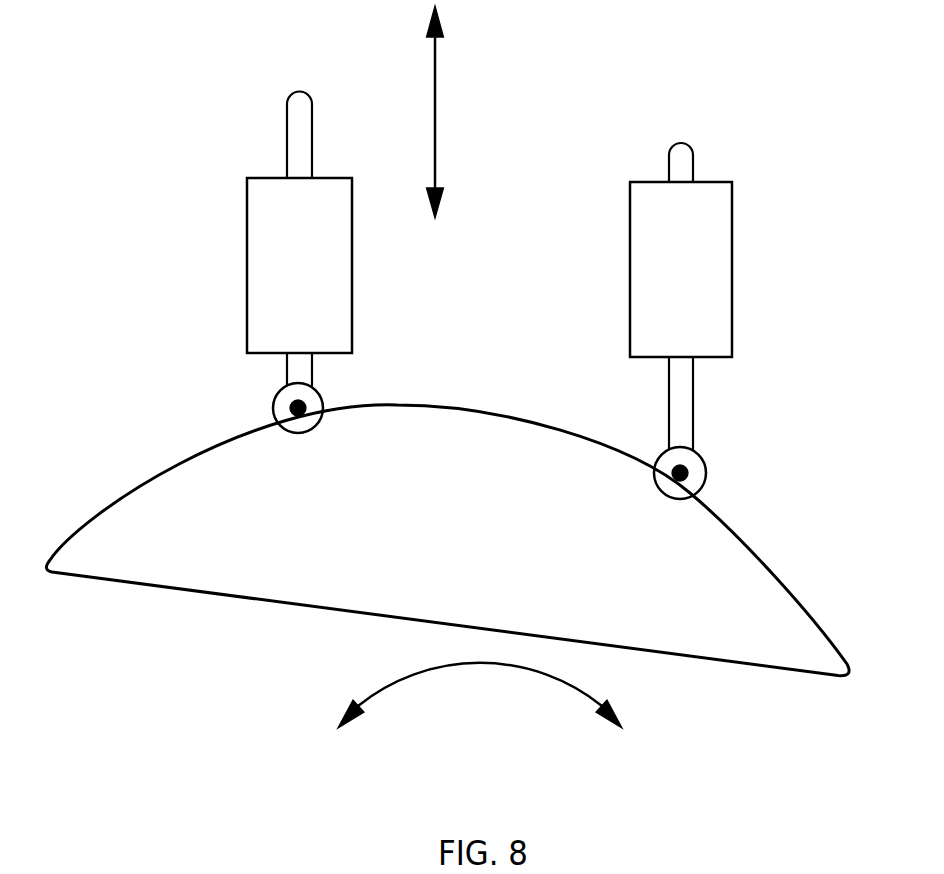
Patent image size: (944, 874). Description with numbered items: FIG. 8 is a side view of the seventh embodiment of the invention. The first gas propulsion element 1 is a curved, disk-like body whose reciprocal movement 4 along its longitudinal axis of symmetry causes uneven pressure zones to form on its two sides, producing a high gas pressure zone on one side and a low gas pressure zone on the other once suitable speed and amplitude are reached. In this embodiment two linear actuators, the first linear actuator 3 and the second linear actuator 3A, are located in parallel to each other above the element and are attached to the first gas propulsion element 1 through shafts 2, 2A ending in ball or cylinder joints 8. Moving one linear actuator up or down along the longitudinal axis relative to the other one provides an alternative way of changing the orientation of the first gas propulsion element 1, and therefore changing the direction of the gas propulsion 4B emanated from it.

The first gas propulsion element 1 is at (212, 478).
The shaft 2 is at (293, 380).
The shaft 2A is at (683, 395).
The first linear actuator 3 is at (268, 262).
The second linear actuator 3A is at (655, 260).
The ball or cylinder joint 8 is at (312, 403).
The reciprocal movement 4 is at (437, 118).
The direction of gas propulsion 4B is at (427, 673).